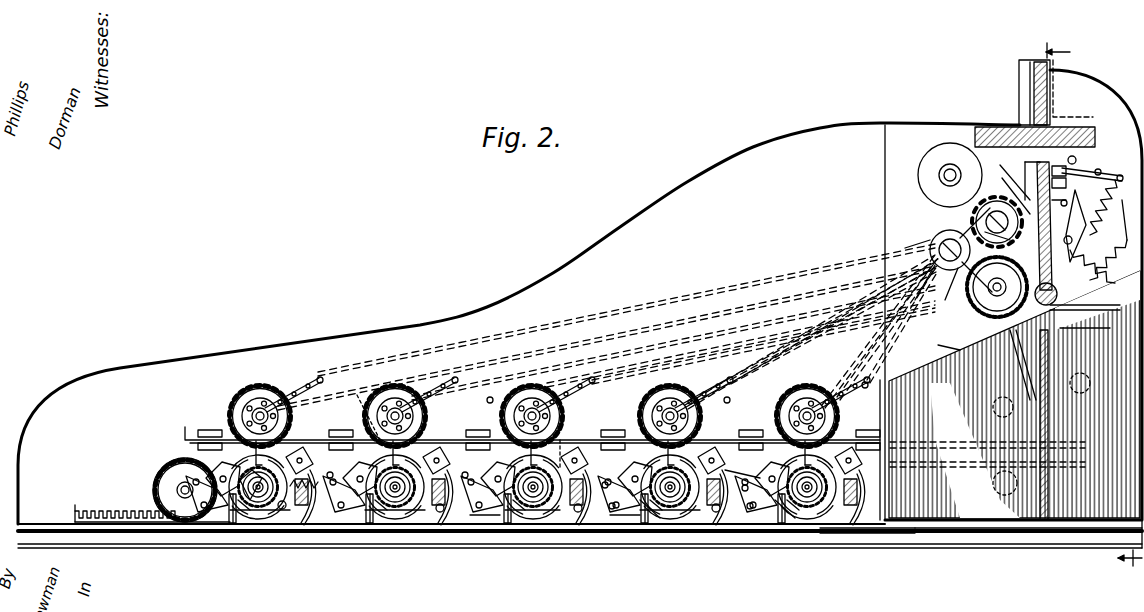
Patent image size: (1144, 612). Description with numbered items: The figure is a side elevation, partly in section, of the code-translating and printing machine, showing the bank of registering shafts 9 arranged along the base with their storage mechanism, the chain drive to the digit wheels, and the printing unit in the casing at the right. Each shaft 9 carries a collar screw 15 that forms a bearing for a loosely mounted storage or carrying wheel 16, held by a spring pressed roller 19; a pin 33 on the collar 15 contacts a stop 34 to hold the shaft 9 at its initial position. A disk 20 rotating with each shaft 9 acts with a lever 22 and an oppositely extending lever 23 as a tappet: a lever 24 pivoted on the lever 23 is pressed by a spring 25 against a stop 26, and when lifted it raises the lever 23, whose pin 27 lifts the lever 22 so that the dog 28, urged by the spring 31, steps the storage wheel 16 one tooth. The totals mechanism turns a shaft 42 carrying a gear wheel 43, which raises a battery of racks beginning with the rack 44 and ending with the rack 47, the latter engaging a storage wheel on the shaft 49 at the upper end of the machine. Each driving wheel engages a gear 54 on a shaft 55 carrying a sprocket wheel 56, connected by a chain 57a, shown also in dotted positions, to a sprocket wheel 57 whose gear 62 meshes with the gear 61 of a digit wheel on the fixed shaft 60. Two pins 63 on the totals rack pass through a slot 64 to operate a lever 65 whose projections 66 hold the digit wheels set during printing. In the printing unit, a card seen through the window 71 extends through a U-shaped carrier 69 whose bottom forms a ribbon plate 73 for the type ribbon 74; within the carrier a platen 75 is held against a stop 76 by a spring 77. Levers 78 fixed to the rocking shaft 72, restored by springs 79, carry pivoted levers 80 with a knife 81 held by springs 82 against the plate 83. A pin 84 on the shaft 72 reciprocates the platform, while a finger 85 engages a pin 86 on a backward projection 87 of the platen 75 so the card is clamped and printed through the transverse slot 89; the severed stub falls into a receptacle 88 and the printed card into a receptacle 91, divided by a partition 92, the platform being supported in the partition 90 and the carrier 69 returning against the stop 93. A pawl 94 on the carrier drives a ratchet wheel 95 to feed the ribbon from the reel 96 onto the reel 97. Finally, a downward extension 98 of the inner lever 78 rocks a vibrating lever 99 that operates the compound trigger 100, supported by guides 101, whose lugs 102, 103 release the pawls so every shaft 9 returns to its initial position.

The shaft 9 is at (385, 482).
The collar screw 15 is at (246, 480).
The storage or carrying wheel 16 is at (533, 453).
The spring pressed wheel or roller 19 is at (437, 452).
The disk 20 is at (497, 471).
The lever 22 is at (425, 505).
The lever 23 is at (487, 516).
The lever 24 is at (304, 474).
The spring 25 is at (536, 473).
The pin or stop 26 is at (576, 490).
The pin 27 is at (283, 510).
The dog 28 is at (655, 518).
The spring 31 is at (612, 510).
The pin 33 is at (374, 515).
The stop 34 is at (248, 495).
The shaft 42 is at (185, 490).
The gear wheel 43 is at (153, 472).
The rack 44 is at (112, 516).
The rack 47 is at (77, 500).
The shaft 49 is at (743, 469).
The gear 54 is at (280, 390).
The shaft 55 is at (840, 372).
The sprocket wheel 56 is at (675, 398).
The sprocket wheel 57 is at (938, 240).
The chain 57a is at (608, 329).
The fixed shaft 60 is at (997, 221).
The gear 61 is at (996, 238).
The gear 62 is at (905, 247).
The pins 63 is at (1005, 483).
The slot 64 is at (895, 466).
The lever 65 is at (971, 375).
The projections 66 is at (950, 199).
The carrier 69 is at (1068, 159).
The window 71 is at (1024, 99).
The shaft 72 is at (1058, 288).
The ribbon plate 73 is at (1037, 228).
The type ribbon 74 is at (1007, 175).
The platen 75 is at (1058, 171).
The pin or stop 76 is at (1059, 234).
The spring 77 is at (1092, 265).
The levers 78 is at (1080, 221).
The springs 79 is at (1108, 251).
The levers 80 is at (1093, 163).
The knife 81 is at (1097, 160).
The springs 82 is at (1110, 207).
The plate 83 is at (1048, 137).
The pin 84 is at (1085, 305).
The finger 85 is at (1123, 220).
The pin 86 is at (1058, 183).
The backward projection 87 is at (1058, 208).
The receptacle 88 is at (1014, 394).
The transverse slot 89 is at (1015, 196).
The partition 90 is at (1085, 338).
The receptacle 91 is at (975, 450).
The partition 92 is at (1040, 500).
The stop 93 is at (1023, 176).
The pawl 94 is at (997, 281).
The ratchet wheel 95 is at (997, 293).
The reel 96 is at (950, 175).
The reel 97 is at (997, 287).
The downward extension 98 is at (1013, 365).
The vibrating lever 99 is at (1080, 383).
The compound trigger 100 is at (184, 432).
The guides 101 is at (535, 426).
The lug 102 is at (361, 413).
The lug 103 is at (577, 446).